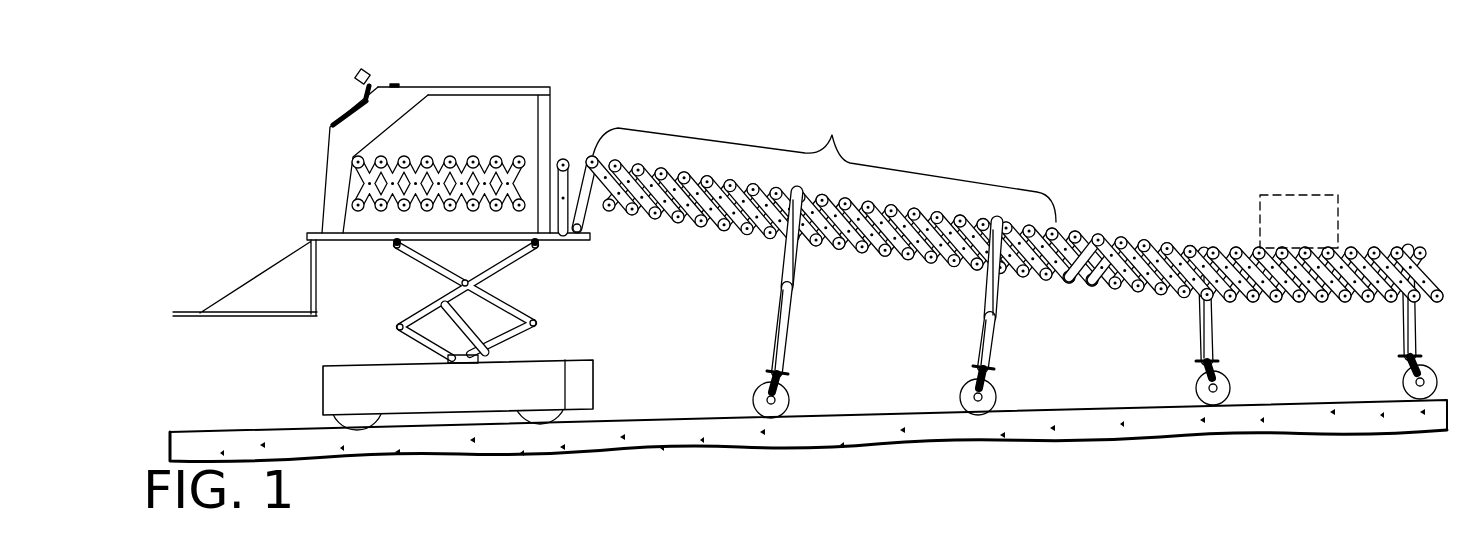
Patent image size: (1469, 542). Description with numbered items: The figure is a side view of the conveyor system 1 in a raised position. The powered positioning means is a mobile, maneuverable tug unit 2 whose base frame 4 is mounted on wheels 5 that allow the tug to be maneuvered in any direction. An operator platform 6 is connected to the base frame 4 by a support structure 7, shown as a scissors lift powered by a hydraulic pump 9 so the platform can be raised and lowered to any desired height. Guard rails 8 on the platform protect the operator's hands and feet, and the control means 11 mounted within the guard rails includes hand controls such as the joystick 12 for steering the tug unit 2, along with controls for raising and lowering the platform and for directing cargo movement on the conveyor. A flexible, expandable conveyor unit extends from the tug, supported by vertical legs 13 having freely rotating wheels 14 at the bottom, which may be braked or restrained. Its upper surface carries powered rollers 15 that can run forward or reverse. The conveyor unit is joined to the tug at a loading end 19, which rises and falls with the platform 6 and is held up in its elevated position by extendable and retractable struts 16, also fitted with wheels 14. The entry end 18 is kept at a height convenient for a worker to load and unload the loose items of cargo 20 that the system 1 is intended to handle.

The conveyor system 1 is at (216, 141).
The tug unit 2 is at (563, 114).
The base frame 4 is at (585, 385).
The wheels 5 is at (533, 413).
The operator platform 6 is at (190, 312).
The support structure 7 is at (500, 302).
The guard rails 8 is at (470, 87).
The hydraulic pump 9 is at (450, 313).
The control means 11 is at (340, 118).
The joystick 12 is at (355, 72).
The vertical legs 13 is at (1217, 323).
The wheels 14 is at (962, 393).
The rollers 15 is at (1137, 242).
The struts 16 is at (1000, 300).
The entry end 18 is at (1305, 541).
The loading end 19 is at (832, 135).
The cargo 20 is at (1287, 198).